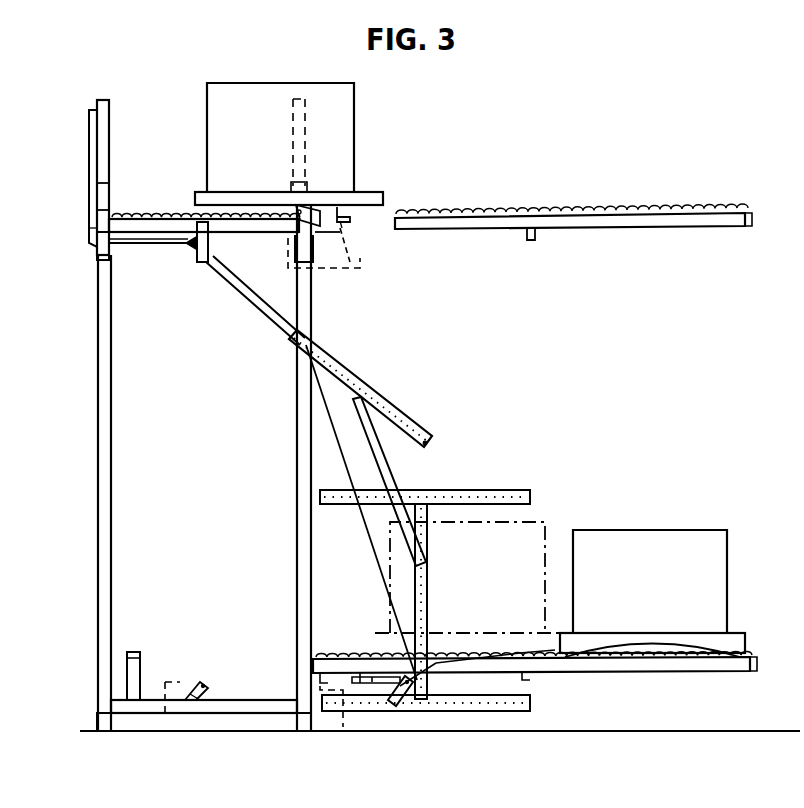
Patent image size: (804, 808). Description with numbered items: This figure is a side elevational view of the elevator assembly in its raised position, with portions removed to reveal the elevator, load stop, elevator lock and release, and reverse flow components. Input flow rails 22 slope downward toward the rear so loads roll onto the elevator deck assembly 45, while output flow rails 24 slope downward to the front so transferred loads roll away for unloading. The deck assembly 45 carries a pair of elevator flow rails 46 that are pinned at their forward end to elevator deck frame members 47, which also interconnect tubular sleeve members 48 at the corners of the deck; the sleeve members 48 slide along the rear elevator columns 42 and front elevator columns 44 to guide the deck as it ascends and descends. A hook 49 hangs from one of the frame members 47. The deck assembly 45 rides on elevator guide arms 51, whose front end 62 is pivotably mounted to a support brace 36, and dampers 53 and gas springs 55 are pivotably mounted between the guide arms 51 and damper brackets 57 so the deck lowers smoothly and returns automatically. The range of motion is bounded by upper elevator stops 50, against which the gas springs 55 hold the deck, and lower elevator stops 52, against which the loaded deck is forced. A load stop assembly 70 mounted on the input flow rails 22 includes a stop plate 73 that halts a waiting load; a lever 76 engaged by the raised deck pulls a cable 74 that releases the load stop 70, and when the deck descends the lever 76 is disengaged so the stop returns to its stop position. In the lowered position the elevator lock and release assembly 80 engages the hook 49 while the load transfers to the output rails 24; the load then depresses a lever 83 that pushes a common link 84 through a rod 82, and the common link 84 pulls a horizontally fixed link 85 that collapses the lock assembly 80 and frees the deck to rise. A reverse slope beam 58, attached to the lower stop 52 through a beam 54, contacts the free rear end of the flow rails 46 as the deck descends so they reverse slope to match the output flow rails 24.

The input flow rails 22 is at (528, 214).
The output flow rails 24 is at (706, 674).
The support braces 36 is at (340, 232).
The rear elevator columns 42 is at (111, 550).
The front elevator columns 44 is at (275, 468).
The elevator deck assembly 45 is at (165, 255).
The elevator flow rails 46 is at (148, 217).
The elevator deck frame members 47 is at (188, 243).
The tubular sleeve members 48 is at (97, 252).
The hook 49 is at (203, 262).
The upper elevator stops 50 is at (97, 200).
The elevator guide arms 51 is at (398, 422).
The lower elevator stops 52 is at (100, 720).
The dampers 53 is at (392, 477).
The beam 54 is at (152, 710).
The gas springs 55 is at (340, 465).
The damper brackets 57 is at (533, 493).
The reverse slope beam 58 is at (141, 672).
The front end of elevator guide arms 62 is at (430, 442).
The load stop assembly 70 is at (375, 250).
The stop plate 73 is at (352, 222).
The cable 74 is at (330, 268).
The lever 76 is at (295, 210).
The elevator lock and release assembly 80 is at (204, 589).
The rod 82 is at (472, 690).
The lever 83 is at (548, 660).
The common link 84 is at (396, 688).
The horizontally fixed link 85 is at (349, 599).